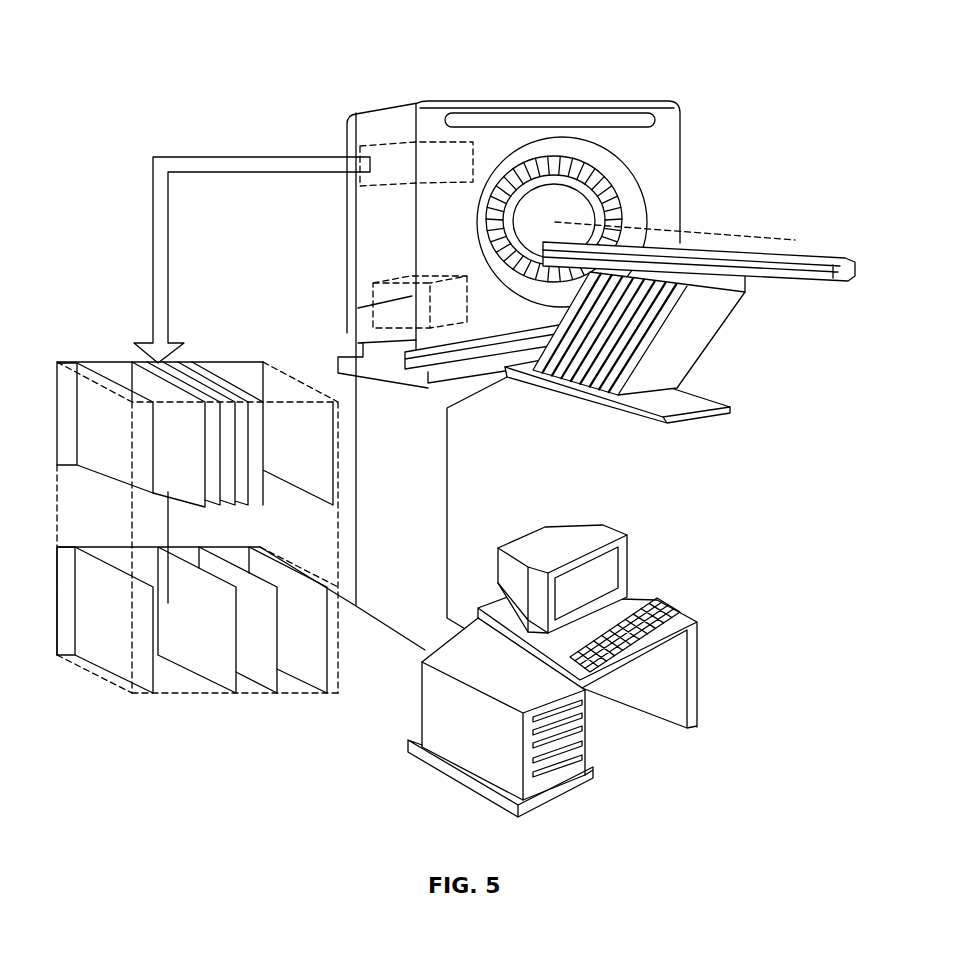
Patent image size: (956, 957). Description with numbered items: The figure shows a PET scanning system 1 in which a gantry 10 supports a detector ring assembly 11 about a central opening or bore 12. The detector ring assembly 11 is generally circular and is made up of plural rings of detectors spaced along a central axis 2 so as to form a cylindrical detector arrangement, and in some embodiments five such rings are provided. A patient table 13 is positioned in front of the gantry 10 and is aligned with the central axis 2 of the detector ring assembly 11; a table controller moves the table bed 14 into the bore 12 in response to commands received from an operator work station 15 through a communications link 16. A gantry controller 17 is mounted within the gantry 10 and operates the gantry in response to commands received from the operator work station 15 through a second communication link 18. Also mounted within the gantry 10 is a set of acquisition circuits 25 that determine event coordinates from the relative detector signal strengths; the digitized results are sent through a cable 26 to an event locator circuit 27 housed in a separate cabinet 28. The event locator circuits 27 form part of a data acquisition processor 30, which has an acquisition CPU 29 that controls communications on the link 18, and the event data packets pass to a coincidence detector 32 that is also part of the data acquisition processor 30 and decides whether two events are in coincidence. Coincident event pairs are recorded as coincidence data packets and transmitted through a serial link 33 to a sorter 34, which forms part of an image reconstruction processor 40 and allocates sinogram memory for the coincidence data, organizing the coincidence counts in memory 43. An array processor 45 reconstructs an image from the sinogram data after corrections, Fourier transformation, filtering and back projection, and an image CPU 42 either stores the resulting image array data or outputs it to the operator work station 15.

The PET scanning system 1 is at (146, 40).
The central axis 2 is at (750, 230).
The gantry 10 is at (683, 151).
The detector ring assembly 11 is at (628, 202).
The bore 12 is at (583, 214).
The patient table 13 is at (740, 325).
The table bed 14 is at (787, 262).
The operator work station 15 is at (632, 522).
The communications link 16 is at (448, 470).
The gantry controller 17 is at (405, 278).
The second communication link 18 is at (358, 528).
The acquisition circuits 25 is at (383, 135).
The cable 26 is at (170, 275).
The event locator circuit 27 is at (192, 458).
The cabinet 28 is at (183, 695).
The acquisition CPU 29 is at (309, 459).
The data acquisition processor 30 is at (96, 356).
The coincidence detector 32 is at (119, 443).
The serial link 33 is at (170, 503).
The sorter 34 is at (119, 627).
The image reconstruction processor 40 is at (88, 548).
The image CPU 42 is at (314, 640).
The memory 43 is at (203, 634).
The array processor 45 is at (262, 640).